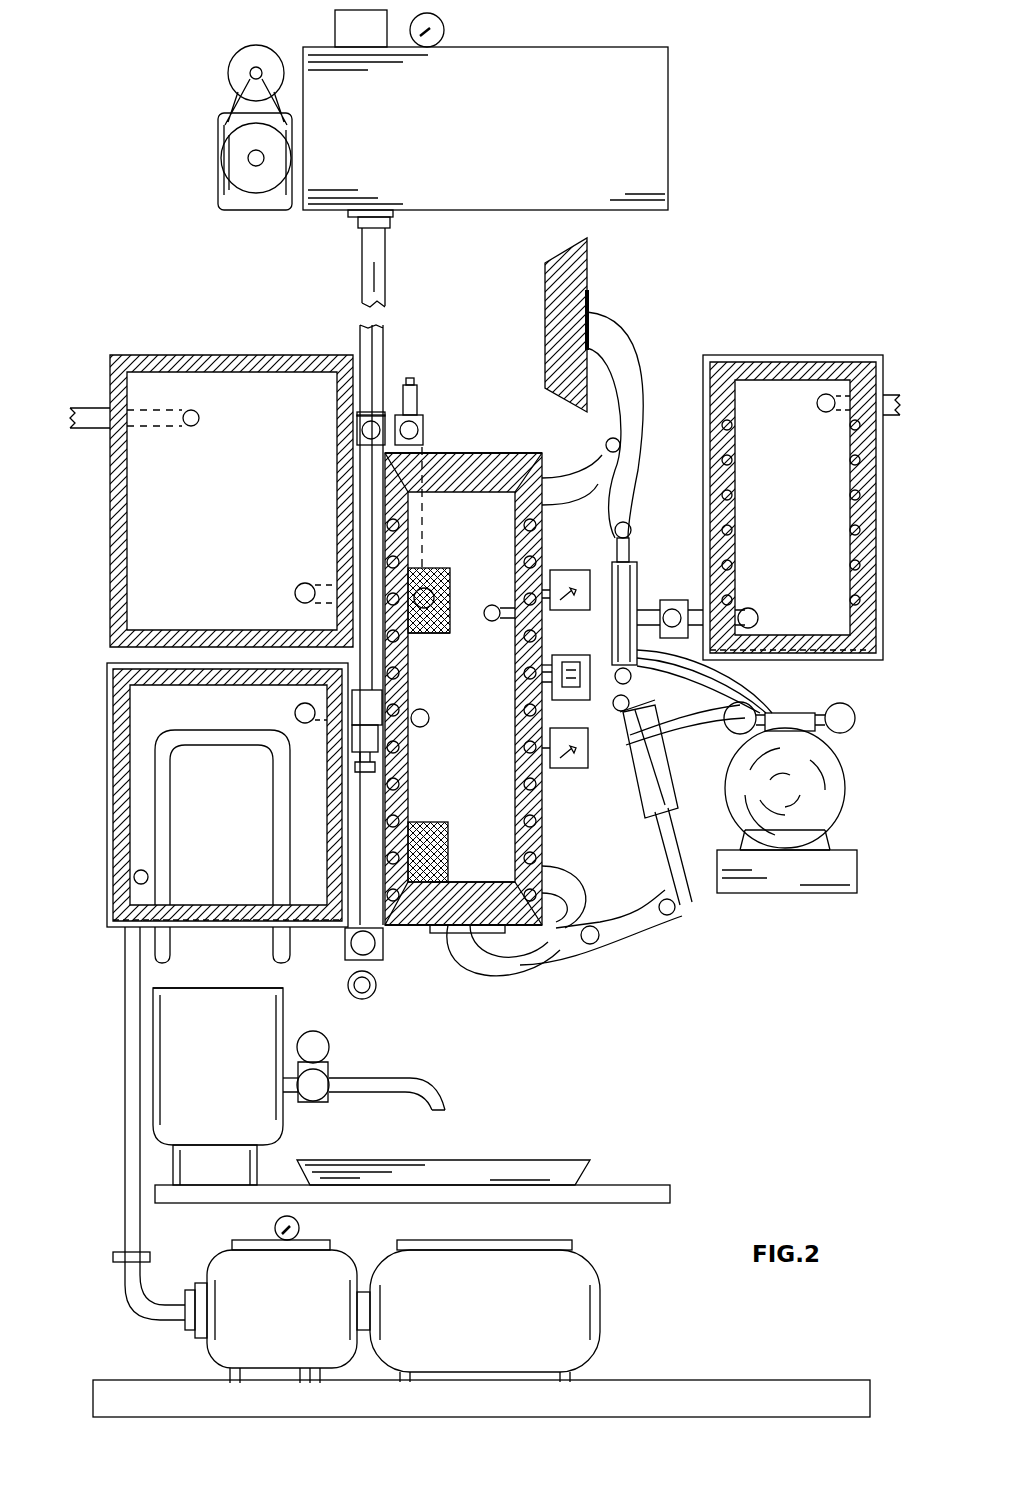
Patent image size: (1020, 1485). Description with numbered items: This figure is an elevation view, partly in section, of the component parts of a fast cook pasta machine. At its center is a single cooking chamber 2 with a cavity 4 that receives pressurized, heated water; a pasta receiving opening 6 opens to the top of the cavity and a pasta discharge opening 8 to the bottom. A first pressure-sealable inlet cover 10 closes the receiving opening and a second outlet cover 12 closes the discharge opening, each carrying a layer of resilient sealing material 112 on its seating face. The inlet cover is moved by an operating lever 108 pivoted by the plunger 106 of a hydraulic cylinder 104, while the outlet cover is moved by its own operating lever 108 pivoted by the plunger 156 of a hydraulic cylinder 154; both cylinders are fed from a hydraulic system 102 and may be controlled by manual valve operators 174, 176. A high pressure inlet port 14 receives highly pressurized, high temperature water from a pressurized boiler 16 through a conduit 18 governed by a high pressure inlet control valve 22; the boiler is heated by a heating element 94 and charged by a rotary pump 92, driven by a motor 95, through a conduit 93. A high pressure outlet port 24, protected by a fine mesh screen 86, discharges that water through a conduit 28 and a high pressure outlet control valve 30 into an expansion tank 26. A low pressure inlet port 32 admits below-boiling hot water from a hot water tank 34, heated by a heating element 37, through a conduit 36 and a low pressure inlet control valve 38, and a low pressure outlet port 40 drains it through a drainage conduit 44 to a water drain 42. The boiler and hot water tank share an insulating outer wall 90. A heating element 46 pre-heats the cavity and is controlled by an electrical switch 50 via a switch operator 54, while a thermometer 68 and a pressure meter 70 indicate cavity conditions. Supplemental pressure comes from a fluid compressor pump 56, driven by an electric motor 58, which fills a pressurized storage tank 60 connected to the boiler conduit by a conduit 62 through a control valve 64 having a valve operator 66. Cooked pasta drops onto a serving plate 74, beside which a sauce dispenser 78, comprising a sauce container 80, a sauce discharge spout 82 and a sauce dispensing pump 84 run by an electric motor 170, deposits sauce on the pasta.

The cooking chamber 2 is at (542, 798).
The cavity 4 is at (527, 836).
The pasta receiving opening 6 is at (486, 456).
The pasta discharge opening 8 is at (462, 880).
The inlet cover 10 is at (588, 264).
The outlet cover 12 is at (416, 930).
The high pressure inlet port 14 is at (425, 720).
The pressurized boiler 16 is at (224, 927).
The conduit 18 is at (309, 706).
The high pressure inlet control valve 22 is at (380, 751).
The high pressure outlet port 24 is at (450, 585).
The expansion tank 26 is at (268, 355).
The conduit 28 is at (338, 588).
The high pressure outlet control valve 30 is at (423, 431).
The low pressure inlet port 32 is at (486, 616).
The hot water tank 34 is at (787, 355).
The conduit 36 is at (747, 610).
The heating element 37 is at (850, 460).
The low pressure inlet control valve 38 is at (688, 604).
The low pressure outlet port 40 is at (450, 862).
The water drain 42 is at (376, 988).
The drainage conduit 44 is at (344, 945).
The heating element 46 is at (398, 525).
The electrical switch 50 is at (547, 669).
The switch operator 54 is at (552, 672).
The fluid compressor pump 56 is at (248, 210).
The electric motor 58 is at (228, 74).
The pressurized storage tank 60 is at (668, 185).
The conduit 62 is at (383, 335).
The control valve 64 is at (356, 417).
The valve operator 66 is at (357, 435).
The thermometer 68 is at (584, 775).
The pressure meter 70 is at (572, 570).
The serving plate 74 is at (590, 1166).
The sauce dispenser 78 is at (283, 1012).
The sauce container 80 is at (278, 1129).
The sauce discharge spout 82 is at (420, 1078).
The sauce dispensing pump 84 is at (322, 1098).
The fine mesh screen 86 is at (418, 633).
The outer wall 90 is at (867, 660).
The rotary pump 92 is at (214, 1258).
The conduit 93 is at (125, 1216).
The heating element 94 is at (220, 744).
The motor 95 is at (600, 1306).
The hydraulic system 102 is at (846, 785).
The hydraulic cylinder 104 is at (636, 568).
The plunger 106 is at (632, 528).
The operating lever 108 is at (627, 327).
The resilient sealing material 112 is at (569, 244).
The hydraulic cylinder 154 is at (648, 742).
The plunger 156 is at (654, 834).
The electric motor 170 is at (324, 1047).
The manual valve operator 174 is at (854, 716).
The manual valve operator 176 is at (735, 730).